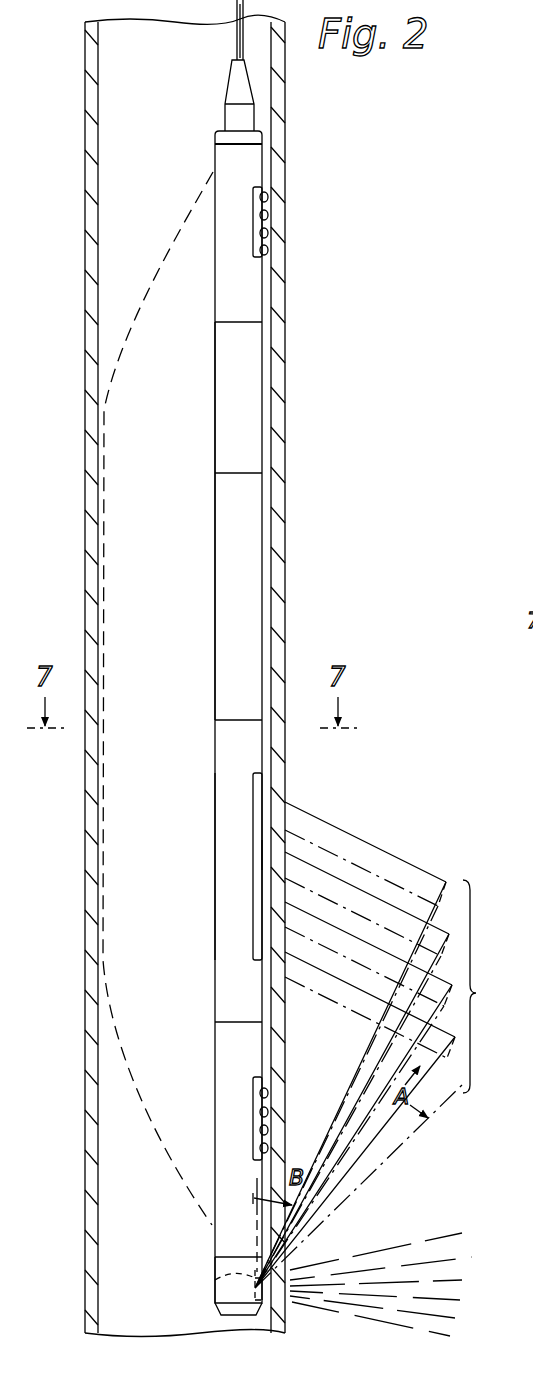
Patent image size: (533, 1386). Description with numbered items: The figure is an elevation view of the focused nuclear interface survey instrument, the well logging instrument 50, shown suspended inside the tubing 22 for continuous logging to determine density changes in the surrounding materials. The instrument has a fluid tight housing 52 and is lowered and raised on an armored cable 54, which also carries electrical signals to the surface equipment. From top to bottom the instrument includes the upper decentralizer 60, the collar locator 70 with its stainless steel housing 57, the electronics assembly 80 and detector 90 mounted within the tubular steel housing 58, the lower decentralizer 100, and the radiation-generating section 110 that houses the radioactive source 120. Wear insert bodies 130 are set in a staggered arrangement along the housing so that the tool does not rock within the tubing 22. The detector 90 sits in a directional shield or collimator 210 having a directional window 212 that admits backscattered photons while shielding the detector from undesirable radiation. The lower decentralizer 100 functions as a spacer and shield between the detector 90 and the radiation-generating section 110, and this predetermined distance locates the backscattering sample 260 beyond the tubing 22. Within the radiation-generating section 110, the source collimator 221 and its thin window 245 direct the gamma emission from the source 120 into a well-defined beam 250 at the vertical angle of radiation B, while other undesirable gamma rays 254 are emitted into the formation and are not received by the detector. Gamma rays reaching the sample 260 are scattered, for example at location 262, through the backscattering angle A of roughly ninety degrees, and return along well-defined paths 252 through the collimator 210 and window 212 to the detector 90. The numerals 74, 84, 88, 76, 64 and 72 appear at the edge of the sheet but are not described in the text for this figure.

The tubing 22 is at (285, 160).
The well logging instrument 50 is at (212, 620).
The fluid tight housing 52 is at (228, 148).
The armored cable 54 is at (236, 41).
The stainless steel housing 57 is at (215, 387).
The housing 58 is at (213, 570).
The upper decentralizer 60 is at (250, 299).
The collar locator 70 is at (250, 437).
The electronics assembly 80 is at (232, 690).
The detector 90 is at (255, 805).
The lower decentralizer 100 is at (225, 1040).
The radiation-generating section 110 is at (222, 1266).
The radioactive source 120 is at (214, 1282).
The wear insert bodies 130 is at (266, 210).
The directional shield or collimator 210 is at (235, 890).
The directional window 212 is at (262, 855).
The source collimator 221 is at (223, 1257).
The window 245 is at (282, 1308).
The gamma ray beams 250 is at (384, 1163).
The paths 252 is at (401, 857).
The undesirable gamma rays 254 is at (448, 1233).
The sample 260 is at (491, 986).
The location 262 is at (458, 1092).
The adjacent figure label 74 is at (519, 312).
The adjacent figure label 84 is at (519, 339).
The adjacent figure label 88 is at (519, 366).
The adjacent figure label 76 is at (532, 396).
The adjacent figure label 64 is at (521, 550).
The adjacent figure label 72 is at (522, 584).